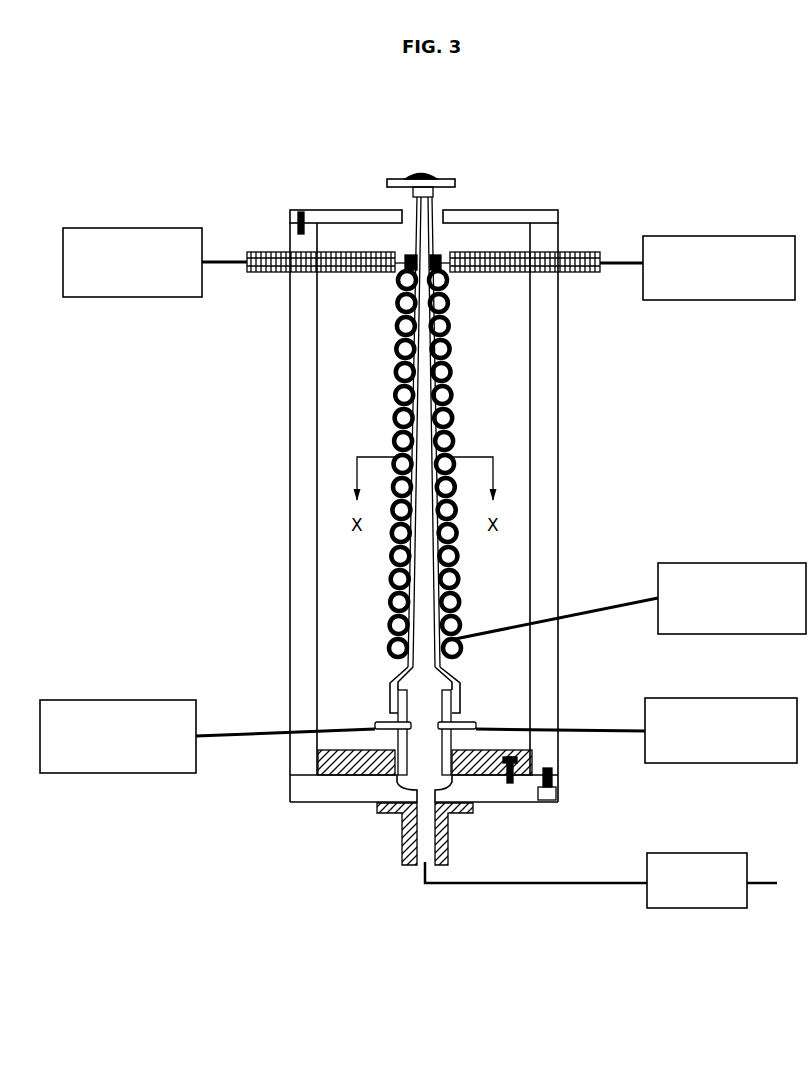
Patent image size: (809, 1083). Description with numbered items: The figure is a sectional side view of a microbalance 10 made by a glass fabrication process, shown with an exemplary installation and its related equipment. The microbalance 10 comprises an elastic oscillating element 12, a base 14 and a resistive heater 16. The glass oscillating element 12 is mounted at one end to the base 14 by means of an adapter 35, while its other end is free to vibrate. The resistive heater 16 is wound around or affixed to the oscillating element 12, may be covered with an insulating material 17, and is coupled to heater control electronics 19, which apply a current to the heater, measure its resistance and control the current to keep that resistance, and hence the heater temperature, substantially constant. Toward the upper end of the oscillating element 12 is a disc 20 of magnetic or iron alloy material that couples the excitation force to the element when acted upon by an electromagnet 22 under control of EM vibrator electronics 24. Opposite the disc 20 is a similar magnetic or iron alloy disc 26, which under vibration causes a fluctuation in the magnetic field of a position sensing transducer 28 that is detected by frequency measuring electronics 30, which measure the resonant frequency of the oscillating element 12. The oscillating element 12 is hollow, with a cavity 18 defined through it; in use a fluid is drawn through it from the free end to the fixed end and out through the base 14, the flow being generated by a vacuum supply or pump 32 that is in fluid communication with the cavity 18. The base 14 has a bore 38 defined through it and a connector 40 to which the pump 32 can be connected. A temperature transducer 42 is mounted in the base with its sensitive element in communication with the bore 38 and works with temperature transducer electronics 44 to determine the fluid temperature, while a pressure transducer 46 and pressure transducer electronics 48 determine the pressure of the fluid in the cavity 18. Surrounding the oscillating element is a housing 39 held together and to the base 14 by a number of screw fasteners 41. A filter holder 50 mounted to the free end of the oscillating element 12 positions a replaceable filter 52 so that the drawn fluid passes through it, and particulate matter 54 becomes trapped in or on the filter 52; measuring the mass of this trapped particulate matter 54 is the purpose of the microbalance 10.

The microbalance 10 is at (335, 412).
The oscillating element 12 is at (256, 432).
The base 14 is at (330, 758).
The resistive heater 16 is at (511, 464).
The insulating material 17 is at (455, 370).
The cavity 18 is at (425, 590).
The heater control electronics 19 is at (707, 562).
The disc 20 is at (446, 250).
The electromagnet 22 is at (512, 245).
The EM vibrator electronics 24 is at (690, 233).
The magnetic or iron alloy disc 26 is at (403, 247).
The position sensing transducer 28 is at (330, 248).
The frequency measuring electronics 30 is at (138, 225).
The vacuum supply or pump 32 is at (680, 850).
The adapter 35 is at (388, 738).
The bore 38 is at (428, 752).
The housing 39 is at (552, 435).
The connector 40 is at (460, 843).
The screw fasteners 41 is at (300, 213).
The temperature transducer 42 is at (378, 712).
The temperature transducer electronics 44 is at (140, 700).
The pressure transducer 46 is at (466, 716).
The pressure transducer electronics 48 is at (705, 700).
The filter holder 50 is at (457, 175).
The filter 52 is at (403, 177).
The particulate matter 54 is at (432, 168).